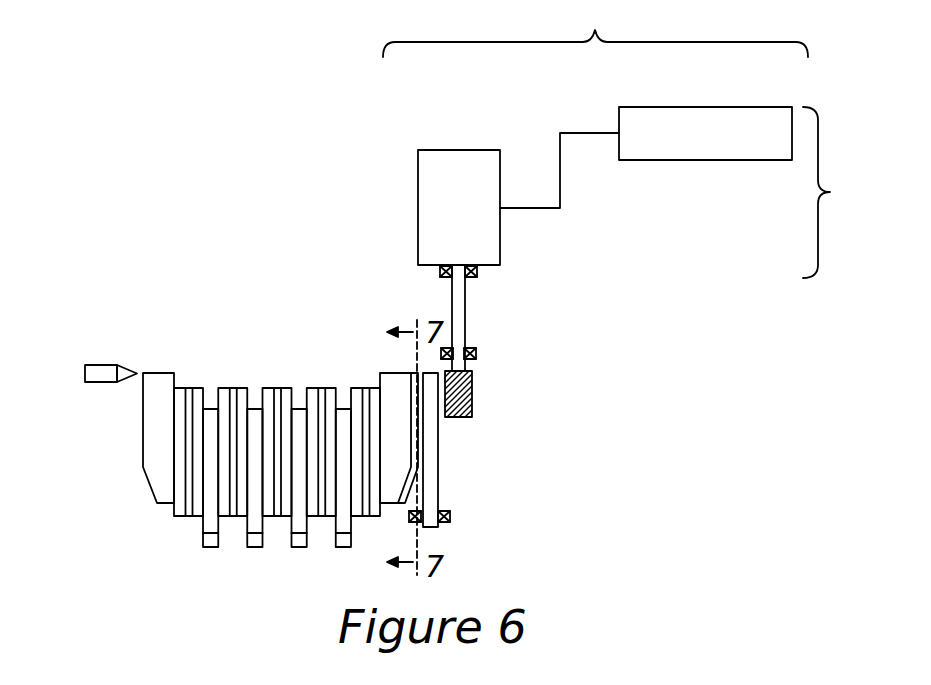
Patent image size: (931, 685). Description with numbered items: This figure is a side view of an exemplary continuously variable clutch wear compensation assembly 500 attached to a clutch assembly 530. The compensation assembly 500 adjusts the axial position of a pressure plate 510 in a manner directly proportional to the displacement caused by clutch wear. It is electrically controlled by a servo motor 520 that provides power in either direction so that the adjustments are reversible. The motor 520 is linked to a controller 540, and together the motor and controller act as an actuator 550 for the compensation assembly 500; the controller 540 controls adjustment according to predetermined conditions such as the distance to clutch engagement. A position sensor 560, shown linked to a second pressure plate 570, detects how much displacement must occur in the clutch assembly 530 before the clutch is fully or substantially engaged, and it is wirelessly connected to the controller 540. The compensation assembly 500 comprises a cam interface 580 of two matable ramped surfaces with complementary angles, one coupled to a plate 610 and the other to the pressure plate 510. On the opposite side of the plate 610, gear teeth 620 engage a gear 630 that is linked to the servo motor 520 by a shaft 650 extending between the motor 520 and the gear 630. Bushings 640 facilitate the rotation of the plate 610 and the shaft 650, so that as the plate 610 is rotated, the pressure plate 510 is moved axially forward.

The clutch wear compensation assembly 500 is at (595, 28).
The pressure plate 510 is at (388, 382).
The servo motor 520 is at (428, 202).
The clutch assembly 530 is at (184, 351).
The controller 540 is at (703, 107).
The actuator 550 is at (844, 192).
The position sensor 560 is at (85, 373).
The second pressure plate 570 is at (152, 453).
The cam interface 580 is at (416, 372).
The plate 610 is at (437, 468).
The gear teeth 620 is at (441, 410).
The gear 630 is at (473, 397).
The bushings 640 is at (445, 279).
The shaft 650 is at (456, 308).